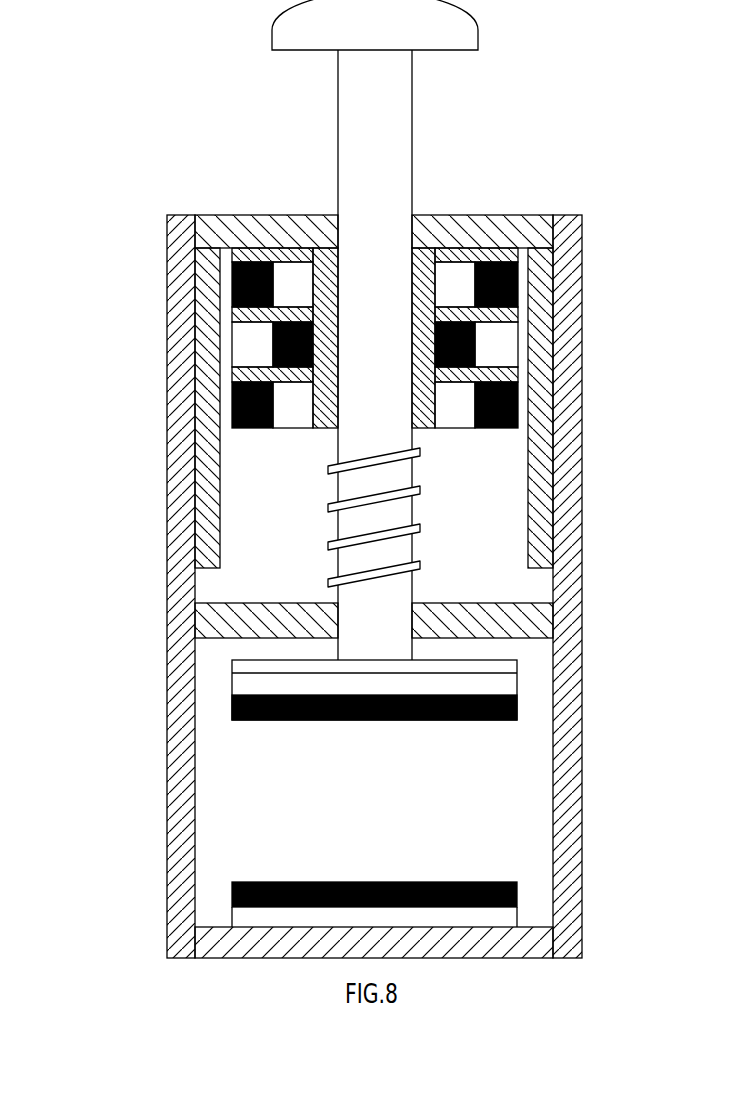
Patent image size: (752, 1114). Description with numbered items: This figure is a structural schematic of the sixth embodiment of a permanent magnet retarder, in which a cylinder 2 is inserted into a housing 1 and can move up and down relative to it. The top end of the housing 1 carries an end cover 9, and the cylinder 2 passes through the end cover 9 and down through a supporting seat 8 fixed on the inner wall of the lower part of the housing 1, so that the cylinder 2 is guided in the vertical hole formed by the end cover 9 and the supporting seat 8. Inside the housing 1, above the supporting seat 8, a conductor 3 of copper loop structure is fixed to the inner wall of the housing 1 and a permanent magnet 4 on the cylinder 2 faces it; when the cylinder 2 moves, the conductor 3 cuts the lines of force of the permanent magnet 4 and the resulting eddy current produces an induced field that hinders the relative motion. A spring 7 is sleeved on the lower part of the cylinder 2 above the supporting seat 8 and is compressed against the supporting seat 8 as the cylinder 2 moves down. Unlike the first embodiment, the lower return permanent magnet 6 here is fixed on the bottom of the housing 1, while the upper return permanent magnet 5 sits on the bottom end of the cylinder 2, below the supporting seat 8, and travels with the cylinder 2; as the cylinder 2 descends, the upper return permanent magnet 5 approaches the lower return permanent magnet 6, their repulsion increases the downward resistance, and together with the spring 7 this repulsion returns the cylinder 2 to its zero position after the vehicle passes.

The housing 1 is at (166, 636).
The cylinder 2 is at (402, 171).
The conductor 3 is at (196, 298).
The permanent magnet 4 is at (255, 356).
The upper return permanent magnet 5 is at (532, 706).
The lower return permanent magnet 6 is at (518, 893).
The spring 7 is at (324, 537).
The supporting seat 8 is at (561, 635).
The end cover 9 is at (518, 225).